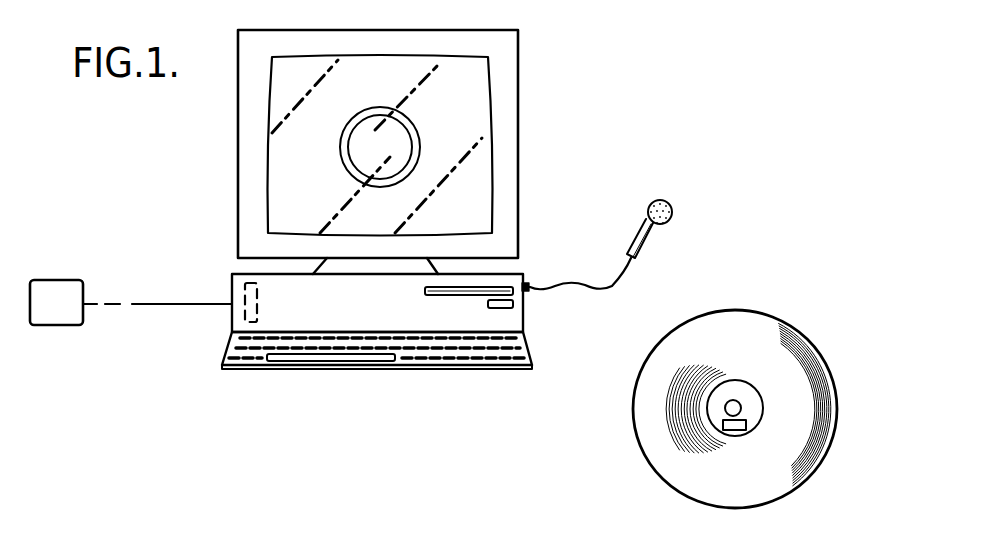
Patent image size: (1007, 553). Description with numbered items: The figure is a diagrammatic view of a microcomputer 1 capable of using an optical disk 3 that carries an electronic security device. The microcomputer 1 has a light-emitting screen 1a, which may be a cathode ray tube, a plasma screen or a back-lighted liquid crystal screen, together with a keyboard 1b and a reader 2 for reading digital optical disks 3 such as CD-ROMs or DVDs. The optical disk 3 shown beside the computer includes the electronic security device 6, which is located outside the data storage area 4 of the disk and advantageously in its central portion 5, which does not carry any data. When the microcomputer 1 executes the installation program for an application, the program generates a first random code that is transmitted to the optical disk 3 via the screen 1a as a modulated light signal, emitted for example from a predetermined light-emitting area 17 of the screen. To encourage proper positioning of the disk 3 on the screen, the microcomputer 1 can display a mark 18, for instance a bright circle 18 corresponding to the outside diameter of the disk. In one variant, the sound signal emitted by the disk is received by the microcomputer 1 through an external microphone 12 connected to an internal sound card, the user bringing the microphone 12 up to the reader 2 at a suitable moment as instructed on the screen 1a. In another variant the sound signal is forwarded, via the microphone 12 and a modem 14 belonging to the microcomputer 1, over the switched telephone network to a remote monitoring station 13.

The microcomputer 1 is at (362, 222).
The light-emitting screen 1a is at (439, 145).
The keyboard 1b is at (433, 357).
The reader 2 is at (493, 288).
The optical disk 3 is at (730, 392).
The data storage area 4 is at (802, 347).
The central portion 5 is at (715, 405).
The electronic security device 6 is at (742, 432).
The external microphone 12 is at (657, 233).
The remote monitoring station 13 is at (55, 312).
The modem 14 is at (245, 317).
The light-emitting area 17 is at (394, 132).
The mark 18 is at (420, 160).